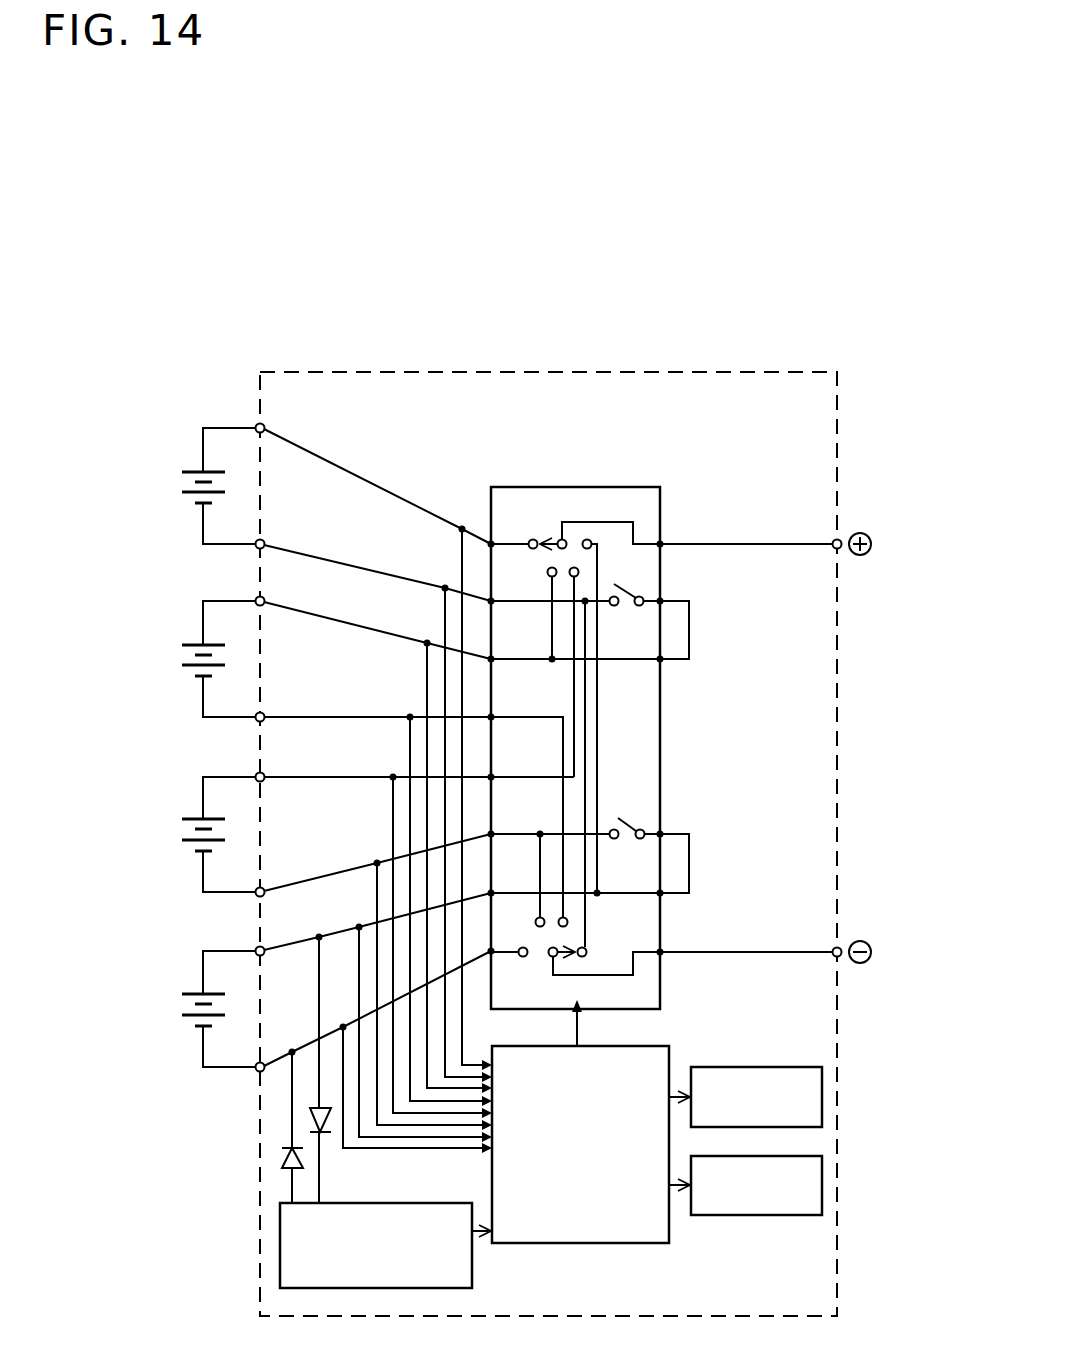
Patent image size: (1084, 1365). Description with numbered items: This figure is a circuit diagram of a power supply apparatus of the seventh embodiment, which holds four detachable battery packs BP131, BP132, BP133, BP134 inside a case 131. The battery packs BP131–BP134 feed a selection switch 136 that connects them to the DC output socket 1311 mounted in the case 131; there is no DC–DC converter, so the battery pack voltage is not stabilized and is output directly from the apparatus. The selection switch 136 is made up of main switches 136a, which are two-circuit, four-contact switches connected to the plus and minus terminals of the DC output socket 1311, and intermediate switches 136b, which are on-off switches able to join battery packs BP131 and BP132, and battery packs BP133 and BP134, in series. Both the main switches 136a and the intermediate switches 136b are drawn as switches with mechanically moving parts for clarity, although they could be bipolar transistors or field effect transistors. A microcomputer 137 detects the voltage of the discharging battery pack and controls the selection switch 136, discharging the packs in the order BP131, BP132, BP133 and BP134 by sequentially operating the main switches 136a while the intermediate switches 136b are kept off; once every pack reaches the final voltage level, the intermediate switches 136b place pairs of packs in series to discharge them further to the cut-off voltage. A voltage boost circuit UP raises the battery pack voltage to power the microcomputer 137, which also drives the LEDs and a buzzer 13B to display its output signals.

The case 131 is at (358, 360).
The battery pack BP131 is at (161, 486).
The battery pack BP132 is at (161, 659).
The battery pack BP133 is at (161, 834).
The battery pack BP134 is at (161, 1009).
The selection switch 136 is at (638, 737).
The main switches 136a is at (548, 536).
The intermediate switches 136b is at (640, 590).
The DC output socket 1311 is at (842, 536).
The microcomputer 137 is at (543, 1243).
The buzzer 13B is at (733, 1216).
The voltage boost circuit UP is at (366, 1203).